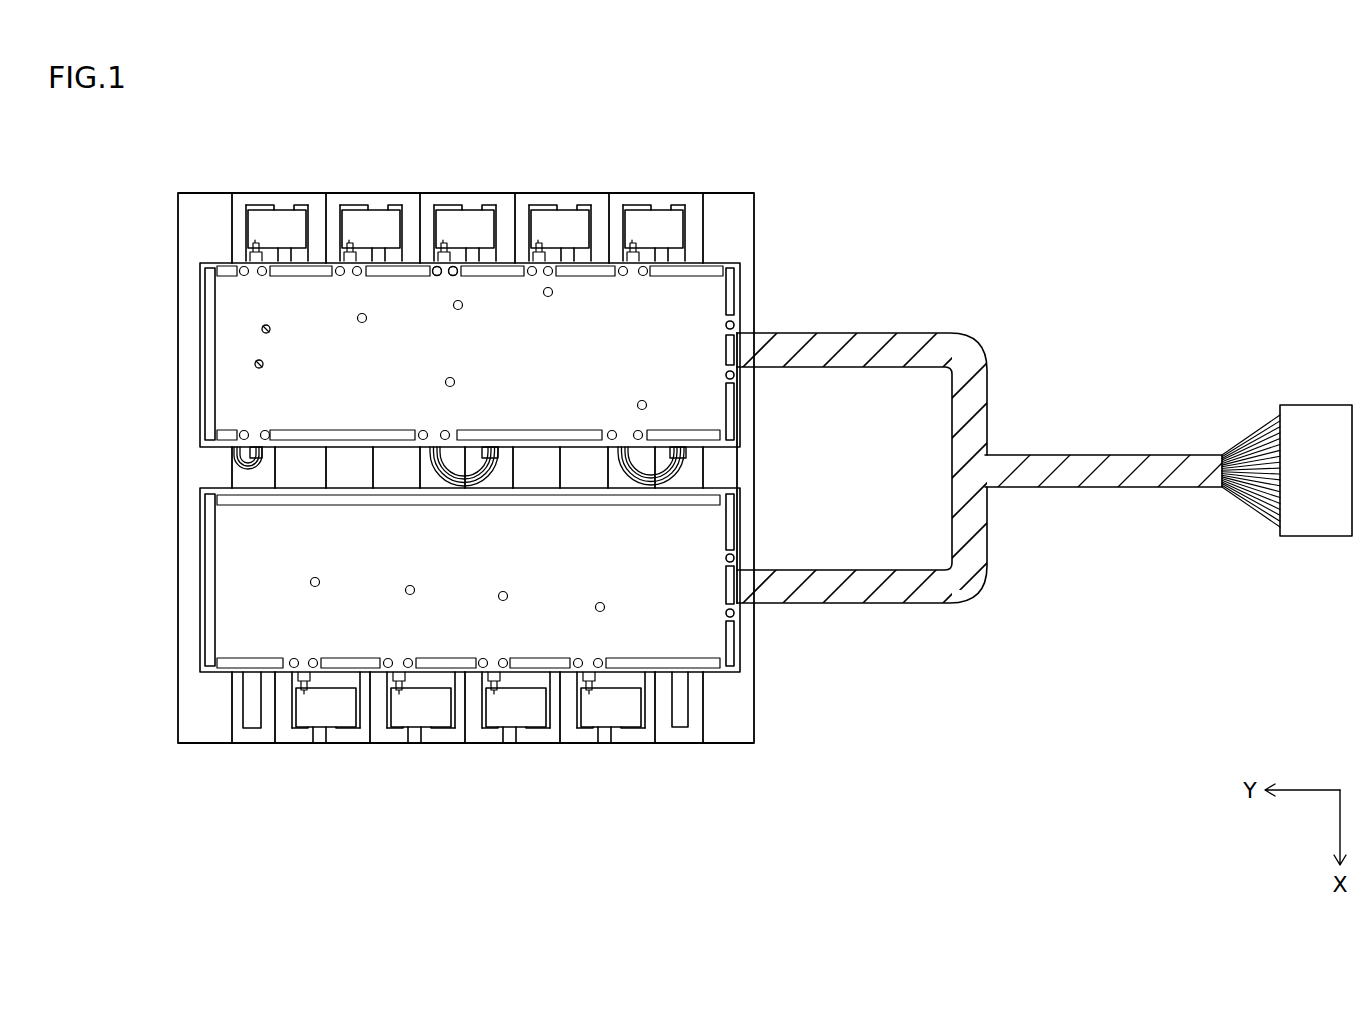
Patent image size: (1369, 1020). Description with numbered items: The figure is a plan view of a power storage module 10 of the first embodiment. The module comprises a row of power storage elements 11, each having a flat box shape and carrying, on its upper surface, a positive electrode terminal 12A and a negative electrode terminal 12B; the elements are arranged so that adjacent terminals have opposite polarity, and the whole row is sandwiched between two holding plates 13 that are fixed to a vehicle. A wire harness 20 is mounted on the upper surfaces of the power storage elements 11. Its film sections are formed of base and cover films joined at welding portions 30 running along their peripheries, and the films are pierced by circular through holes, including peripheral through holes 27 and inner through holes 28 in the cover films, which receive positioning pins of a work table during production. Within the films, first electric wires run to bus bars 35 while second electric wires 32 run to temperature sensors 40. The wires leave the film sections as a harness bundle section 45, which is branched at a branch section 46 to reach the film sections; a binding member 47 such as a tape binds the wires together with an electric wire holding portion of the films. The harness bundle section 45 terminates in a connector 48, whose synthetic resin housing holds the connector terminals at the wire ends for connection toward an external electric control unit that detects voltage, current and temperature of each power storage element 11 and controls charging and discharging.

The power storage module 10 is at (938, 81).
The power storage element 11 is at (253, 735).
The positive electrode terminal 12A is at (300, 205).
The negative electrode terminal 12B is at (248, 205).
The holding plate 13 is at (180, 640).
The wire harness 20 is at (972, 156).
The through hole 27 is at (448, 278).
The through hole 28 is at (268, 333).
The welding portion 30 is at (205, 360).
The second electric wire 32 is at (260, 480).
The bus bar 35 is at (285, 218).
The temperature sensor 40 is at (248, 452).
The harness bundle section 45 is at (1162, 395).
The branch section 46 is at (975, 470).
The binding member 47 is at (1103, 480).
The connector 48 is at (1317, 425).